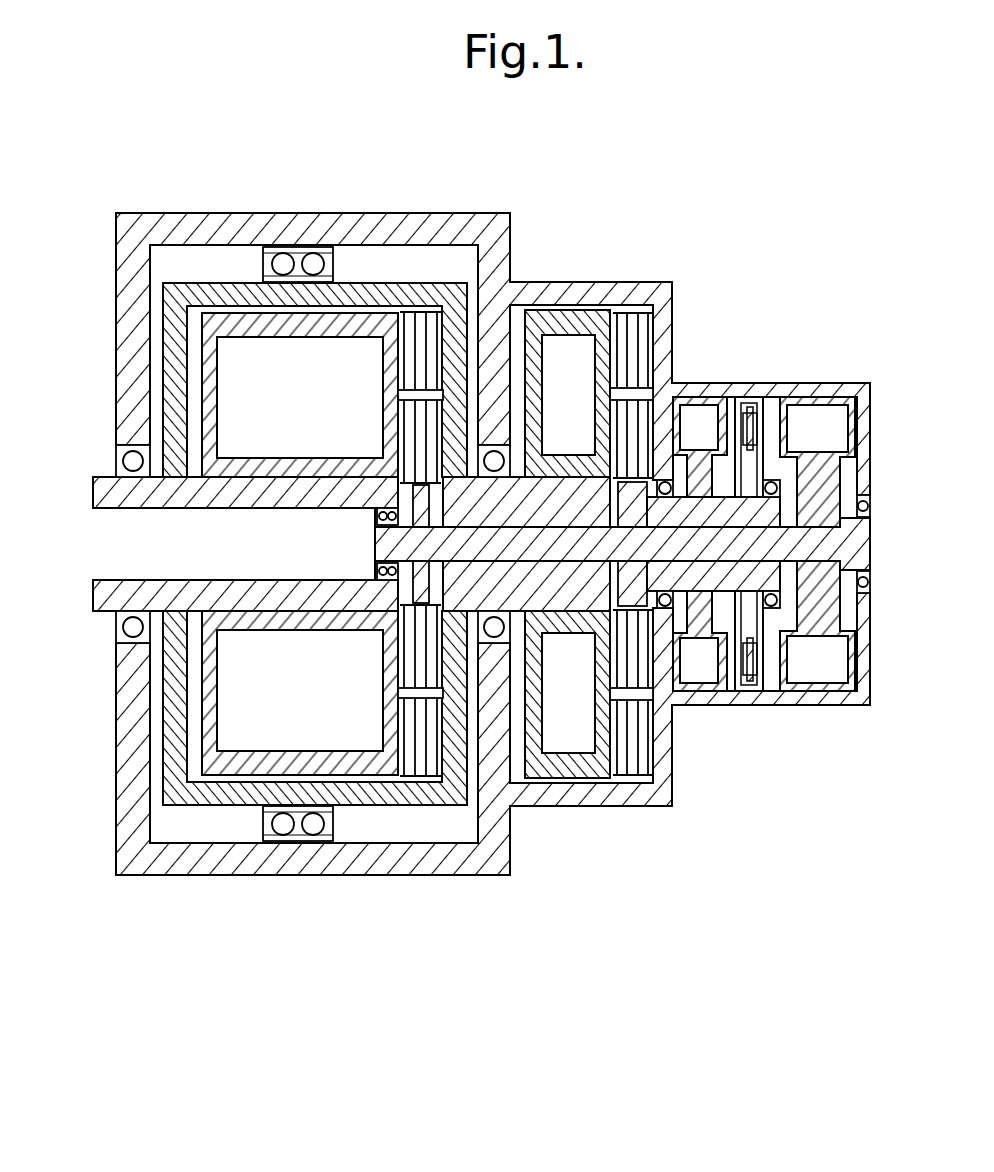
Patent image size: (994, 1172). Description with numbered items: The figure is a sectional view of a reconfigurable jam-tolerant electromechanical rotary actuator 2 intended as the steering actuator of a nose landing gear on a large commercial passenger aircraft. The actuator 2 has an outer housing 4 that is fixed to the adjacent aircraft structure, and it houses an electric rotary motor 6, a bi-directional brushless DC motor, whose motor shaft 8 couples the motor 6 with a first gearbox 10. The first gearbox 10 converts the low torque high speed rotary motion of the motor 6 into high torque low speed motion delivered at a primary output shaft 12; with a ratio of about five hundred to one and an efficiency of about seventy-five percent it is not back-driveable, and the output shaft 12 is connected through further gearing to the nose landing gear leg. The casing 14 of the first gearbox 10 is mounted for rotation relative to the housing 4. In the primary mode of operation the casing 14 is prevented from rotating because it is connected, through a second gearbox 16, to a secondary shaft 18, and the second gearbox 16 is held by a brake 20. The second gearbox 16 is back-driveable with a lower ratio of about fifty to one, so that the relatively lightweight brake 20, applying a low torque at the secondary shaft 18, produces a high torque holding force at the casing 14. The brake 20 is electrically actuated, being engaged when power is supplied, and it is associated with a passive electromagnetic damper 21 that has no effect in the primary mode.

The electromechanical rotary actuator 2 is at (410, 908).
The outer housing 4 is at (457, 236).
The electric rotary motor 6 is at (815, 420).
The motor shaft 8 is at (383, 541).
The first gearbox 10 is at (320, 703).
The primary output shaft 12 is at (108, 484).
The casing of the first gearbox 14 is at (173, 292).
The second gearbox 16 is at (586, 405).
The secondary shaft 18 is at (762, 577).
The brake 20 is at (757, 430).
The damper 21 is at (700, 420).